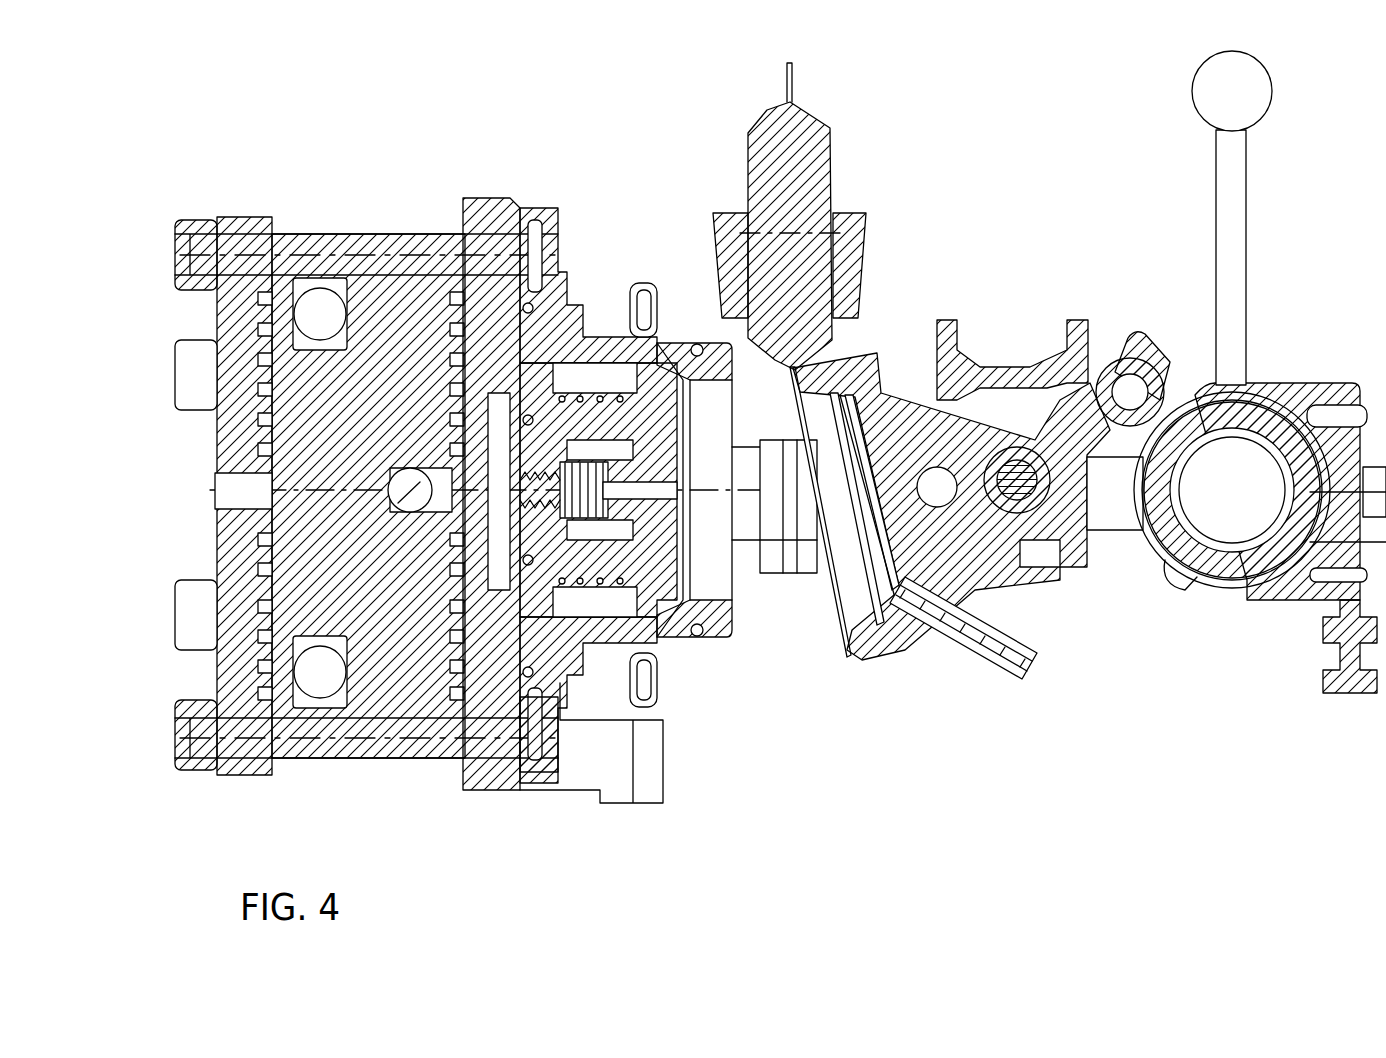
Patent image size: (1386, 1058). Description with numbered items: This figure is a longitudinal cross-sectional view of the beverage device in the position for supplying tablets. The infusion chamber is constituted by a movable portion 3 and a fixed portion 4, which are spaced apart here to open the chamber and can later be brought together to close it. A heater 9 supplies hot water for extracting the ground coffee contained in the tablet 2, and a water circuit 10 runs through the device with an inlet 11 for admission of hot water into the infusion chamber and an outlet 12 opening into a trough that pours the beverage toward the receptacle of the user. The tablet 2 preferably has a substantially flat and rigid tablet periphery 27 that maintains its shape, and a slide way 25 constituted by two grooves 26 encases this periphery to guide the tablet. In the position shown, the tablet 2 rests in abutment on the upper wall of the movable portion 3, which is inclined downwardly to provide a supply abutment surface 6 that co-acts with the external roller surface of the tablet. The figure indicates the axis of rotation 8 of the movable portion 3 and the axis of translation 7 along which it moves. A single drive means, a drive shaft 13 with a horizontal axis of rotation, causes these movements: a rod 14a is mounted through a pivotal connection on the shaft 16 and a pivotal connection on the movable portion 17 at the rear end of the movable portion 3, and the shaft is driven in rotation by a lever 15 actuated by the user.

The tablet 2 is at (805, 130).
The tablet periphery 27 is at (795, 73).
The slide way 25 is at (722, 233).
The supply abutment surface 6 is at (850, 355).
The axis of rotation 8 is at (940, 475).
The rod 14a is at (1047, 367).
The pivotal connection on the shaft 16 is at (1135, 378).
The lever 15 is at (1235, 175).
The heater 9 is at (290, 440).
The water circuit 10 is at (455, 500).
The inlet 11 is at (500, 528).
The fixed portion 4 is at (722, 655).
The axis of translation 7 is at (750, 497).
The groove 26 is at (790, 572).
The movable portion 3 is at (918, 648).
The outlet 12 is at (1010, 673).
The pivotal connection on movable portion 17 is at (1037, 500).
The drive shaft 13 is at (1197, 555).